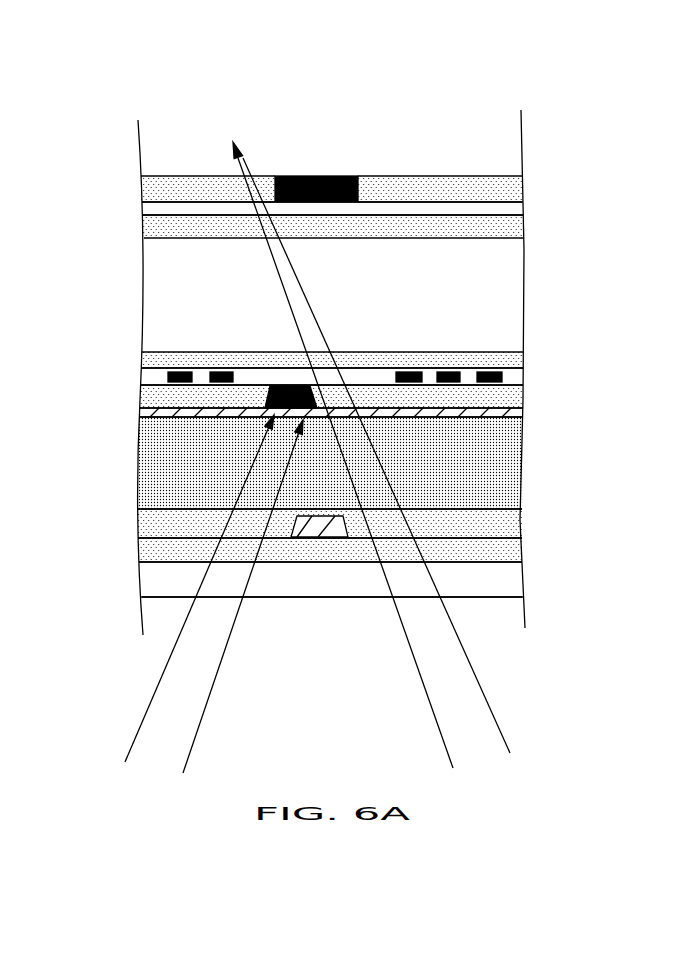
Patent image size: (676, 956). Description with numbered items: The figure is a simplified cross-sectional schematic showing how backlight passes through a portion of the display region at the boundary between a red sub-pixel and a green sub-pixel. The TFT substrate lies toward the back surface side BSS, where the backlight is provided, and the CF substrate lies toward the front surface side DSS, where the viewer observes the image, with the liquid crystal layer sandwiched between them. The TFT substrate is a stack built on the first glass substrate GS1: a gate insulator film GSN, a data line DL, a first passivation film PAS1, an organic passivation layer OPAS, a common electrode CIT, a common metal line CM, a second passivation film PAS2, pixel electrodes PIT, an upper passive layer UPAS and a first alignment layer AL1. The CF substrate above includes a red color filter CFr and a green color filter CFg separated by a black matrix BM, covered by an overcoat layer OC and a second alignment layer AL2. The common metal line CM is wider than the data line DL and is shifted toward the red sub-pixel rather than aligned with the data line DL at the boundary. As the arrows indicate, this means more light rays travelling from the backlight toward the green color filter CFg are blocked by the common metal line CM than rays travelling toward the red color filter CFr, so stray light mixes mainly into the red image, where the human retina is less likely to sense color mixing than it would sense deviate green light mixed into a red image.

The front surface side DSS is at (360, 242).
The back surface side BSS is at (367, 525).
The red color filter CFr is at (194, 186).
The green color filter CFg is at (451, 183).
The black matrix BM is at (323, 178).
The overcoat layer OC is at (522, 205).
The second alignment layer AL2 is at (521, 227).
The first alignment layer AL1 is at (523, 349).
The upper passive layer UPAS is at (523, 373).
The pixel electrode PIT is at (407, 370).
The second passivation film PAS2 is at (523, 391).
The common metal line CM is at (283, 385).
The common electrode CIT is at (523, 412).
The organic passivation layer OPAS is at (523, 463).
The first passivation film PAS1 is at (523, 520).
The data line DL is at (318, 538).
The gate insulator film GSN is at (522, 553).
The first glass substrate GS1 is at (523, 585).